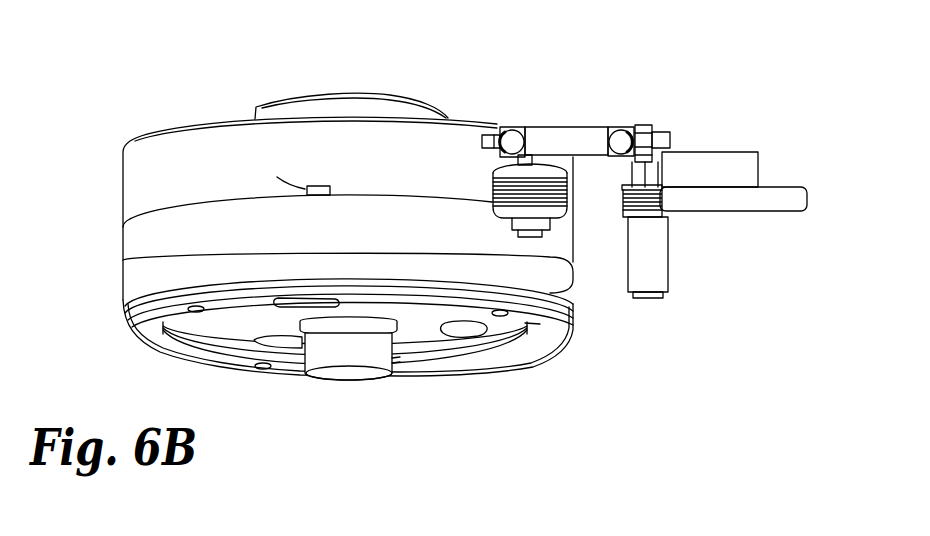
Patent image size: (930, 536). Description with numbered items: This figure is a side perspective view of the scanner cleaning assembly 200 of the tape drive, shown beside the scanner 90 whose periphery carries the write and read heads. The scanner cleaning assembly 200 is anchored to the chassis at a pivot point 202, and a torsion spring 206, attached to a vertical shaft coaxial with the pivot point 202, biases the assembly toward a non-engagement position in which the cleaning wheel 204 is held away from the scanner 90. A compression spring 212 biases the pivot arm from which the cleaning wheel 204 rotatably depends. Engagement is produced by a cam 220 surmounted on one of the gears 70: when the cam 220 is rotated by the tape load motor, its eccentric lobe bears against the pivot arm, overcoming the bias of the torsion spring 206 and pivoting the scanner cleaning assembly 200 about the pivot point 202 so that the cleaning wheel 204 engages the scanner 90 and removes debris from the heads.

The scanner 90 is at (163, 147).
The scanner cleaning assembly 200 is at (705, 98).
The compression spring 212 is at (565, 140).
The cleaning wheel 204 is at (493, 197).
The cam 220 is at (750, 170).
The gear 70 is at (797, 200).
The torsion spring 206 is at (622, 187).
The pivot point 202 is at (653, 273).